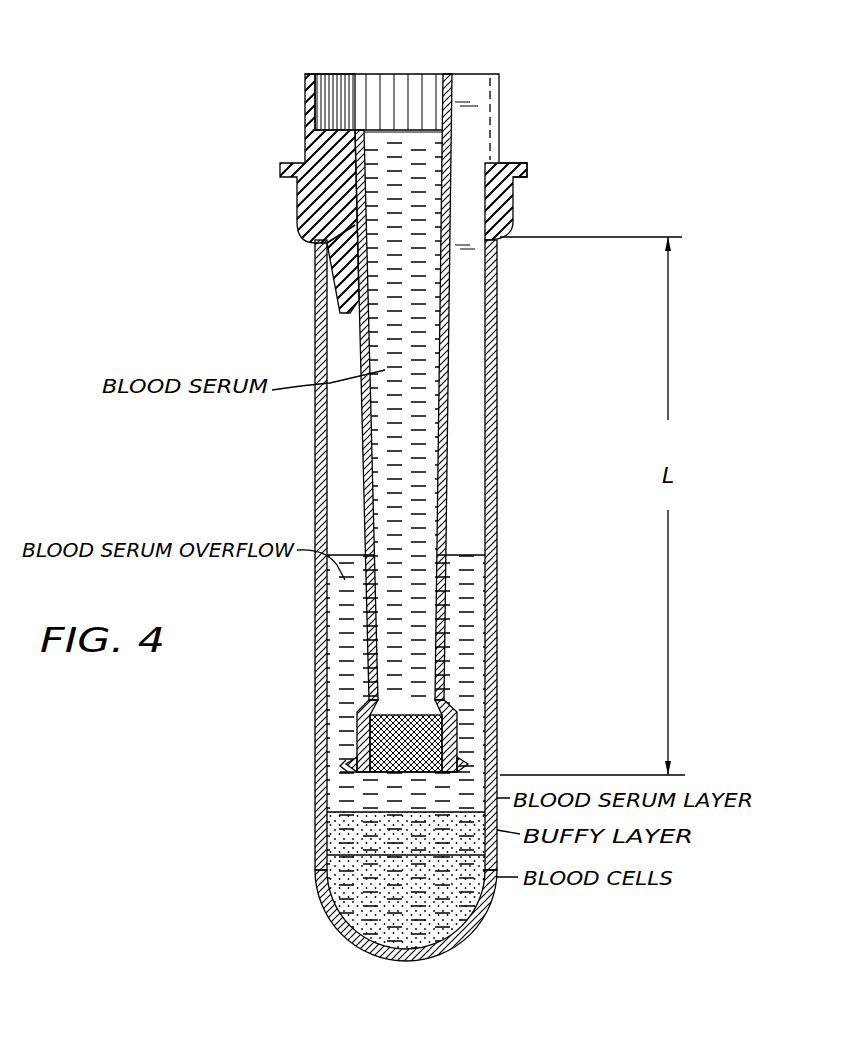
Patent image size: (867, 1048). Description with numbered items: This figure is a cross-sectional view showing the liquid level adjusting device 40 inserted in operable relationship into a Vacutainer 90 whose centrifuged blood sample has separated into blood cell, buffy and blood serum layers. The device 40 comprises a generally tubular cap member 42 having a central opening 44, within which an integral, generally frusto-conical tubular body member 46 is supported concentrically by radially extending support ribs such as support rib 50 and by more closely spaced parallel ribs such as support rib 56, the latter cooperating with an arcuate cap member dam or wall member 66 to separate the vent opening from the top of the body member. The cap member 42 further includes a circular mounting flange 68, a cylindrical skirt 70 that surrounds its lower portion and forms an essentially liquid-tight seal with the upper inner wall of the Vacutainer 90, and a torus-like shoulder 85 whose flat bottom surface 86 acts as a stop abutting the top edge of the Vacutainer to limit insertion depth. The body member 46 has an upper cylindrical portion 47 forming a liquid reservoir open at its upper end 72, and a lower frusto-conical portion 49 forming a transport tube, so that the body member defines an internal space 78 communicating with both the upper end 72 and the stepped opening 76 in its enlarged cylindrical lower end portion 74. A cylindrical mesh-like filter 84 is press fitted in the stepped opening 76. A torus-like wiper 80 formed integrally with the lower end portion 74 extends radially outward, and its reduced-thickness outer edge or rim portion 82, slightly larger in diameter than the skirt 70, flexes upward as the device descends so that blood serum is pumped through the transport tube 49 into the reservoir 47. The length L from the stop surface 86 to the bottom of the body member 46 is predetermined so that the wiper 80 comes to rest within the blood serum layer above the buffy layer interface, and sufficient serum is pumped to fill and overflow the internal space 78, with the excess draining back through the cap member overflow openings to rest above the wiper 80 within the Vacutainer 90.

The liquid level adjusting device 40 is at (355, 488).
The cap member 42 is at (305, 82).
The central opening 44 is at (322, 103).
The tubular body member 46 is at (455, 262).
The upper cylindrical portion 47 is at (452, 168).
The lower frusto-conical portion 49 is at (440, 617).
The support rib 50 is at (333, 277).
The support rib 56 is at (470, 85).
The cap member dam or wall member 66 is at (428, 98).
The mounting flange 68 is at (288, 166).
The skirt 70 is at (340, 290).
The upper end 72 is at (363, 130).
The lower end portion 74 is at (458, 720).
The stepped opening 76 is at (370, 728).
The internal space 78 is at (432, 456).
The wiper 80 is at (357, 768).
The outer edge or rim portion 82 is at (483, 748).
The filter 84 is at (385, 775).
The shoulder 85 is at (345, 234).
The flat bottom surface 86 is at (330, 249).
The Vacutainer 90 is at (492, 398).